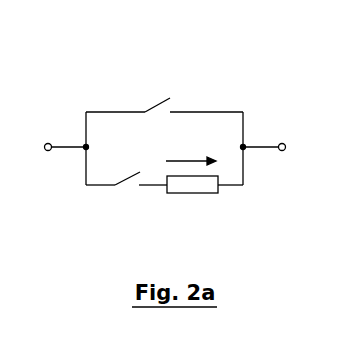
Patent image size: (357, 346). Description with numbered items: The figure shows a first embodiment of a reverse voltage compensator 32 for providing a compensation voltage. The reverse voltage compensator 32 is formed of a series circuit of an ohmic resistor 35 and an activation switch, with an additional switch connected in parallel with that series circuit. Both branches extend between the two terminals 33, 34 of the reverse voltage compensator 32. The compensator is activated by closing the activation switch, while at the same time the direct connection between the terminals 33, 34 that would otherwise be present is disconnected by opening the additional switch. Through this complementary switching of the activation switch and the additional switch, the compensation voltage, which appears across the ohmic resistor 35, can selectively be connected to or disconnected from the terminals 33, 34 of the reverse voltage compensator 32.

The reverse voltage compensator 32 is at (233, 75).
The terminal 33 is at (48, 142).
The terminal 34 is at (282, 142).
The ohmic resistor 35 is at (197, 194).